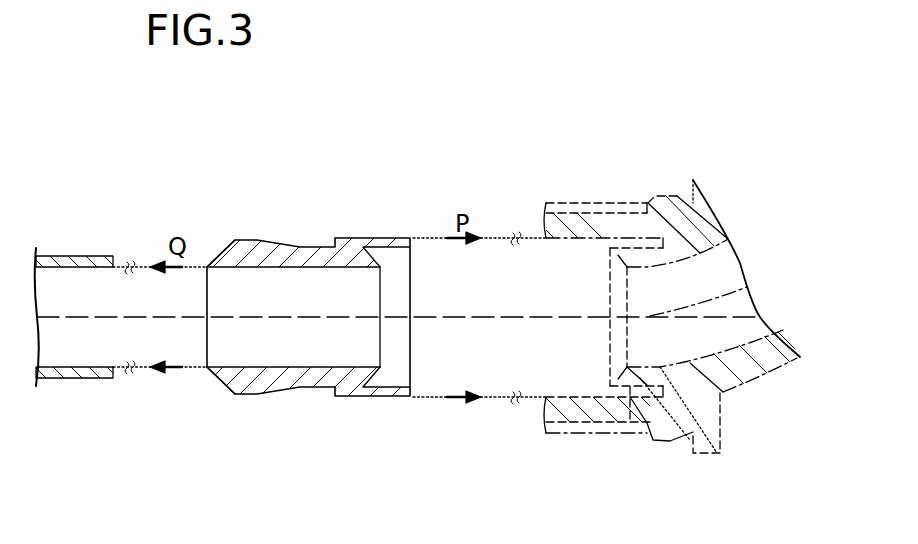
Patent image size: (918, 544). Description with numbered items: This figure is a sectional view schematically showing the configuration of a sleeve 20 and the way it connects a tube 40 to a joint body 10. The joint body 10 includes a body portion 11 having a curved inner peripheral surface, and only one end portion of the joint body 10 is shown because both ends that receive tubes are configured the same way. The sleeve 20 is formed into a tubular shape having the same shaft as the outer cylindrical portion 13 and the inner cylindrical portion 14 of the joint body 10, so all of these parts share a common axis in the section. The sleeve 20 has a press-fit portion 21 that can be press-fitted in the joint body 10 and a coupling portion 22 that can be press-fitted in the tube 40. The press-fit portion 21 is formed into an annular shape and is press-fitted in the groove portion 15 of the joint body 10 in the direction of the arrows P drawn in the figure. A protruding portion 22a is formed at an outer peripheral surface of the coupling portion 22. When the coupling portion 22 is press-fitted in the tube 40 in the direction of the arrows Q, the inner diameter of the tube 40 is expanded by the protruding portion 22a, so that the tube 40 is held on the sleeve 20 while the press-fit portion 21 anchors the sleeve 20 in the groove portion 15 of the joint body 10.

The joint body 10 is at (656, 120).
The body portion 11 is at (760, 378).
The outer cylindrical portion 13 is at (585, 425).
The inner cylindrical portion 14 is at (633, 425).
The groove portion 15 is at (630, 246).
The sleeve 20 is at (331, 186).
The press-fit portion 21 is at (388, 240).
The coupling portion 22 is at (303, 256).
The protruding portion 22a is at (245, 240).
The tube 40 is at (67, 257).